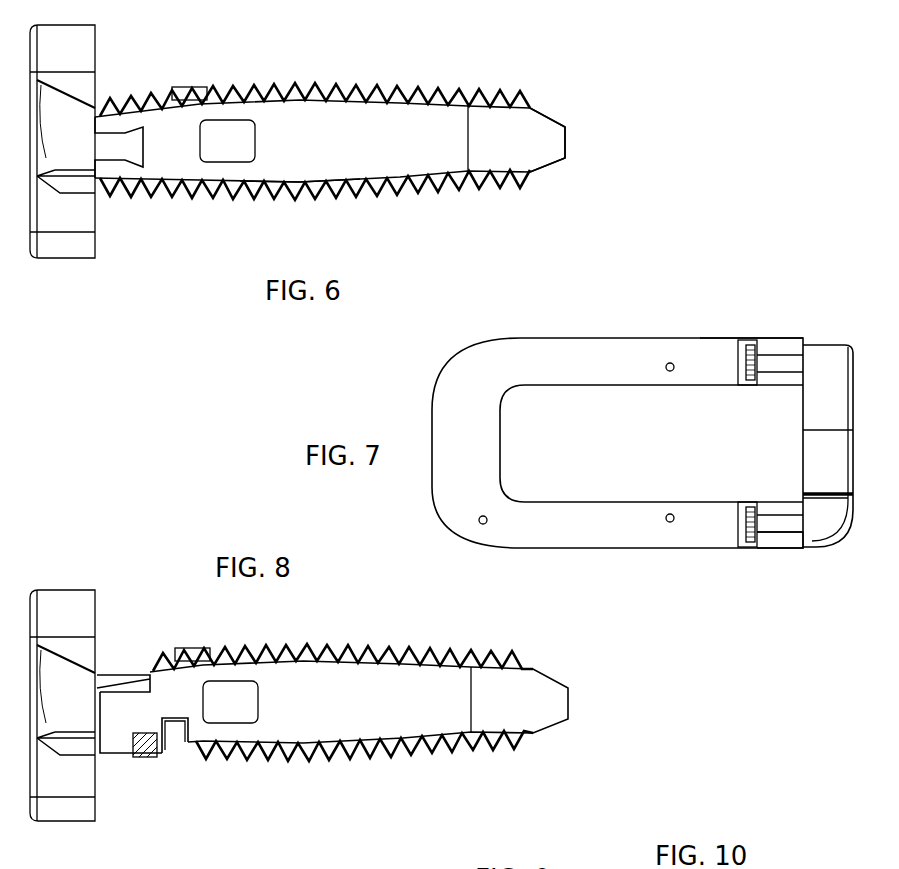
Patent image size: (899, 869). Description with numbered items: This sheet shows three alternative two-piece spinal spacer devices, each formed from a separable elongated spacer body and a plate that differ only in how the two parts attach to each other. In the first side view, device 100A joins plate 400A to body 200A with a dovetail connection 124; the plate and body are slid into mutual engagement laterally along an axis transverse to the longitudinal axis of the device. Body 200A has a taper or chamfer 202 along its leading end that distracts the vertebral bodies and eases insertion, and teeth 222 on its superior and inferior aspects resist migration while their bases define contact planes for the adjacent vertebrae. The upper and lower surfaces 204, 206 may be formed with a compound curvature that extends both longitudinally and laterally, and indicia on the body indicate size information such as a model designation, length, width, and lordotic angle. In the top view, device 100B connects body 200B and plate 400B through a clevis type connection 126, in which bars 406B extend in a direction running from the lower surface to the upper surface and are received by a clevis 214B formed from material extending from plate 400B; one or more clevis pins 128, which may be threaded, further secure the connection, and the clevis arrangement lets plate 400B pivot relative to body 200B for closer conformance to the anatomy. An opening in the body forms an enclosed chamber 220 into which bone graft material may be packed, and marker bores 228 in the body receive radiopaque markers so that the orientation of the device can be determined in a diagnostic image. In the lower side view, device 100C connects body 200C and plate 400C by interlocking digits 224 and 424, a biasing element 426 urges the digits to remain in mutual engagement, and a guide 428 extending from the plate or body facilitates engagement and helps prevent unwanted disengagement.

In FIG. 6, the device 100A is at (577, 70).
In FIG. 6, the plate 400A is at (118, 73).
In FIG. 6, the body 200A is at (238, 70).
In FIG. 6, the upper surface 204 is at (473, 96).
In FIG. 6, the lower surface 206 is at (458, 196).
In FIG. 6, the teeth 222 is at (286, 199).
In FIG. 6, the taper or chamfer 202 is at (558, 116).
In FIG. 6, the dovetail connection 124 is at (155, 160).
In FIG. 7, the device 100B is at (570, 326).
In FIG. 7, the body 200B is at (421, 412).
In FIG. 7, the clevis type connection 126 is at (784, 334).
In FIG. 7, the chamber 220 is at (598, 456).
In FIG. 7, the clevis pins 128 is at (742, 358).
In FIG. 7, the marker bores 228 is at (476, 512).
In FIG. 7, the bars 406B is at (766, 360).
In FIG. 7, the clevis 214B is at (782, 540).
In FIG. 7, the plate 400B is at (790, 455).
In FIG. 8, the device 100C is at (549, 742).
In FIG. 8, the plate 400C is at (74, 582).
In FIG. 8, the biasing element 426 is at (115, 677).
In FIG. 8, the digit 224 is at (113, 722).
In FIG. 8, the guide 428 is at (150, 760).
In FIG. 8, the digit 424 is at (168, 745).
In FIG. 8, the body 200C is at (308, 768).